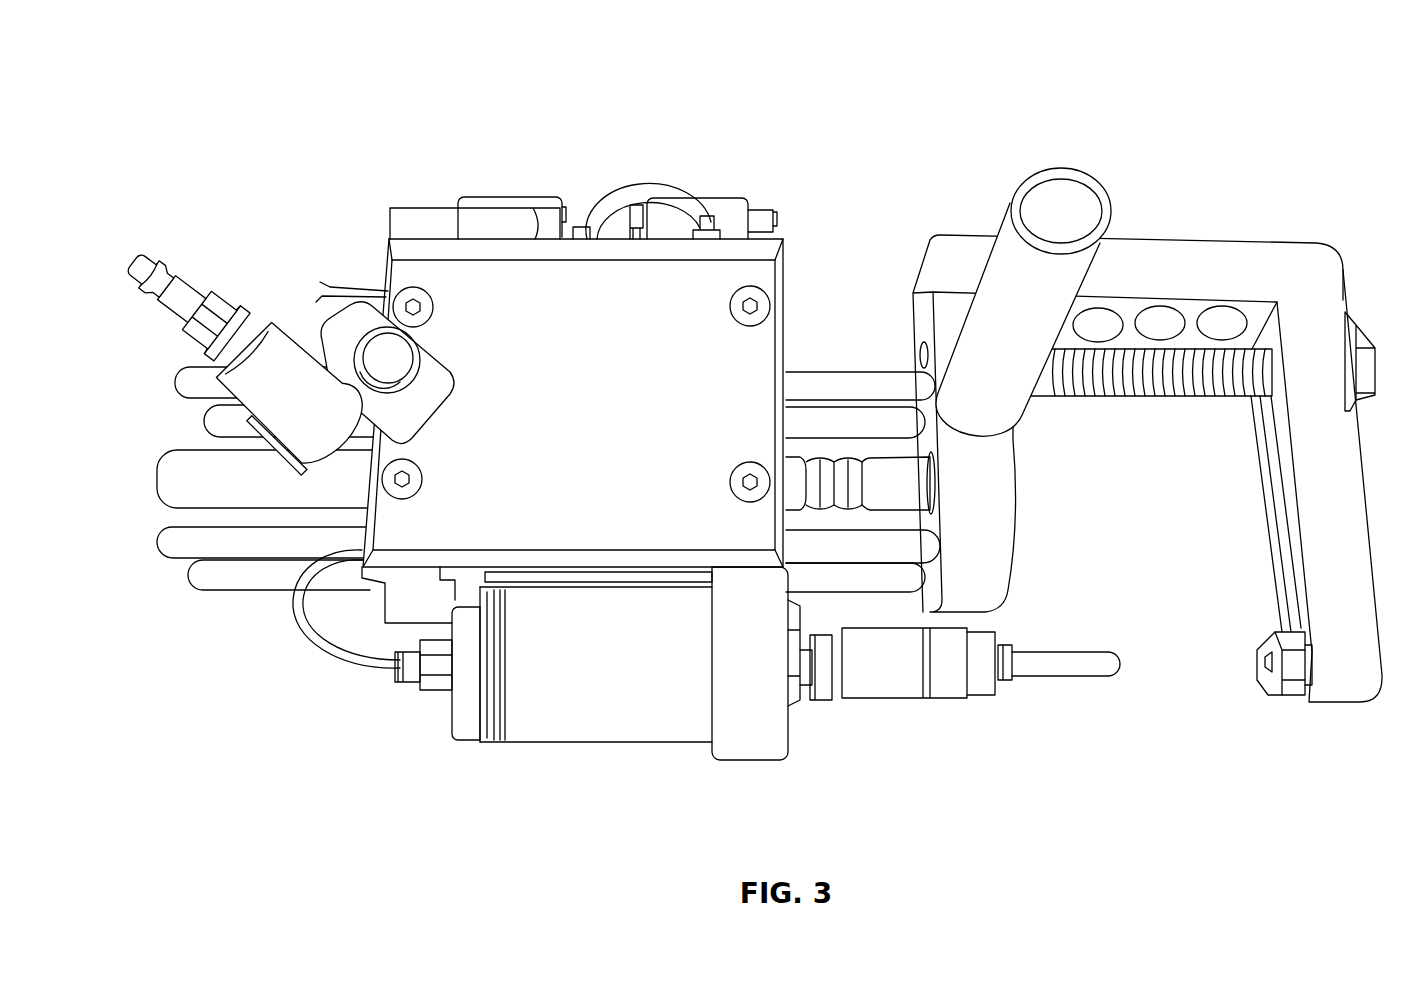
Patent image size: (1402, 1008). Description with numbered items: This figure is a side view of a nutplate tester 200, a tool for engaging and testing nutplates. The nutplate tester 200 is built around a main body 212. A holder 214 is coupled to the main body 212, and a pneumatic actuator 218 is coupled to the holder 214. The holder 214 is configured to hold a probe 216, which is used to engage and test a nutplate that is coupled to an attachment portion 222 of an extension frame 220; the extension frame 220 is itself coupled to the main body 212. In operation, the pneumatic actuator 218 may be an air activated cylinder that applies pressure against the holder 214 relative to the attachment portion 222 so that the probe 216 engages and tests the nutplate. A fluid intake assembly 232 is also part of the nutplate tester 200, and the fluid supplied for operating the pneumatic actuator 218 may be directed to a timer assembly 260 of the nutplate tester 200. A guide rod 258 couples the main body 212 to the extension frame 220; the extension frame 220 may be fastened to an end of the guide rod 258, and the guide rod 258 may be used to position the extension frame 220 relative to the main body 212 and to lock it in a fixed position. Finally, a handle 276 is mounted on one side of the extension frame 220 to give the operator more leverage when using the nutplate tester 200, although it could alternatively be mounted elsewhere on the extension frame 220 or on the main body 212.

The nutplate tester 200 is at (183, 89).
The main body 212 is at (748, 276).
The holder 214 is at (945, 676).
The probe 216 is at (1073, 668).
The pneumatic actuator 218 is at (620, 706).
The extension frame 220 is at (1283, 163).
The attachment portion 222 is at (1288, 678).
The fluid intake assembly 232 is at (292, 275).
The guide rod 258 is at (886, 468).
The timer assembly 260 is at (478, 143).
The handle 276 is at (1043, 178).